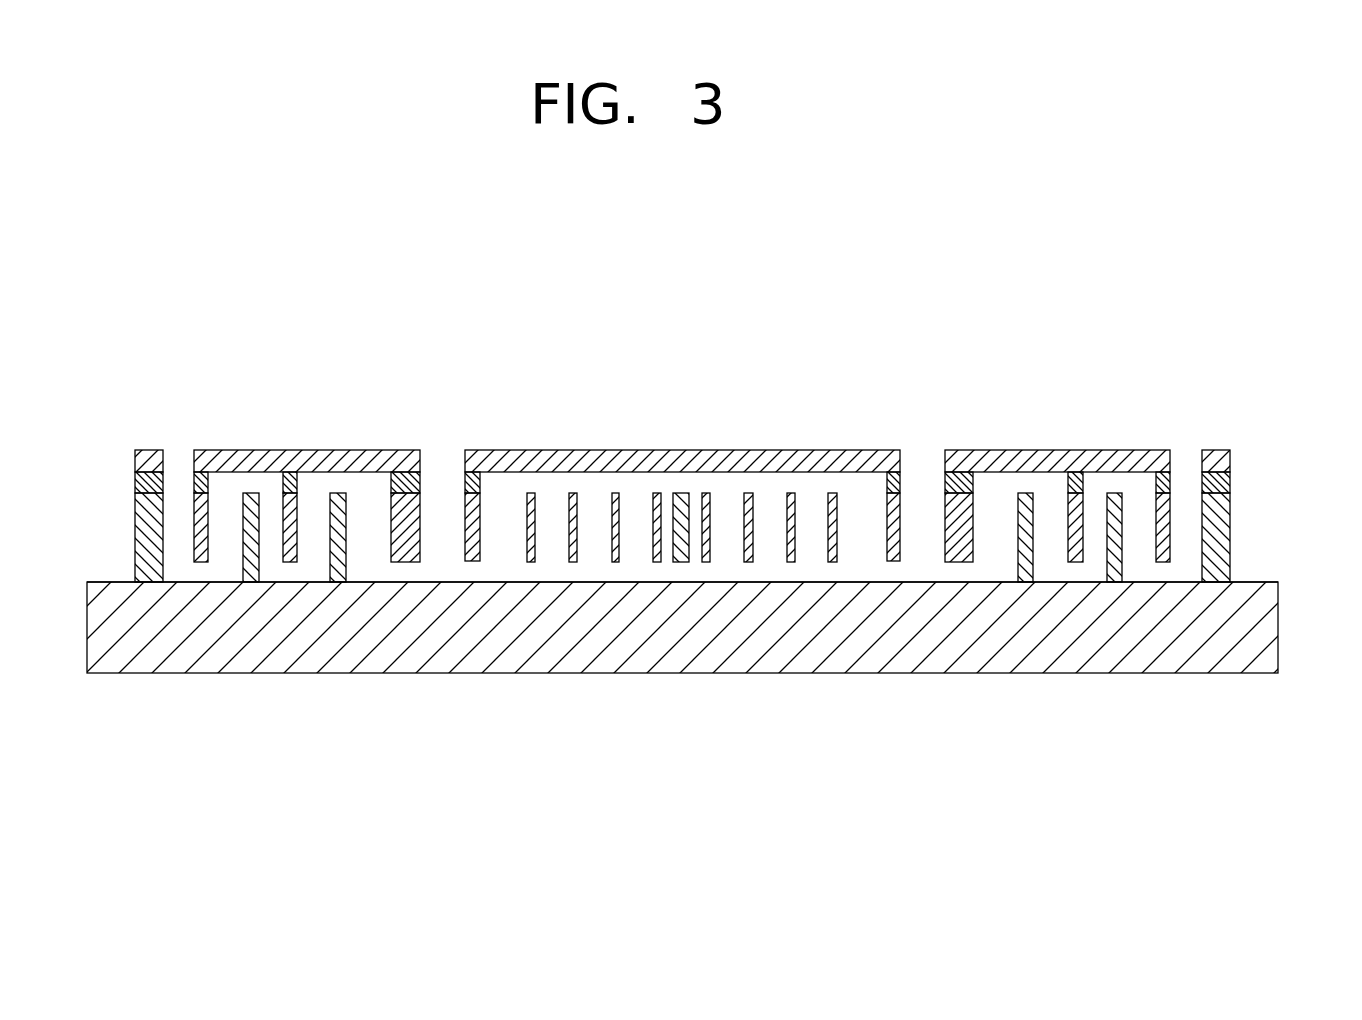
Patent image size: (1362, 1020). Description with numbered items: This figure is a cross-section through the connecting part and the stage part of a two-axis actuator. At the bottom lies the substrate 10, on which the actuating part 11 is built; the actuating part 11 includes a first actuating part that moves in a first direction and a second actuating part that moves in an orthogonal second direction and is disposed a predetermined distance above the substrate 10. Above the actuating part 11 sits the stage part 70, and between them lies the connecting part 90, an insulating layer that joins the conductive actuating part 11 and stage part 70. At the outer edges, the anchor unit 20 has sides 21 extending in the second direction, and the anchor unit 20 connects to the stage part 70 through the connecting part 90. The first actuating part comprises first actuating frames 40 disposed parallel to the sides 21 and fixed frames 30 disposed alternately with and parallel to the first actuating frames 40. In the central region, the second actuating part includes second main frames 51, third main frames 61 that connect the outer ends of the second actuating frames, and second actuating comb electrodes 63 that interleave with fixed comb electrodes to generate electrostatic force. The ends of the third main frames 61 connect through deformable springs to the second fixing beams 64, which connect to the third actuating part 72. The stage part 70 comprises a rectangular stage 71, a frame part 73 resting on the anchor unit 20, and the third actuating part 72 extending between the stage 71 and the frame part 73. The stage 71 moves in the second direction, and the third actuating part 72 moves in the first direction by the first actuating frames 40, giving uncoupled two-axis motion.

The substrate 10 is at (100, 628).
The actuating part 11 is at (133, 556).
The anchor unit 20 is at (687, 537).
The sides extending in the second direction 21 is at (145, 531).
The fixed frames 30 is at (247, 570).
The first actuating frames 40 is at (197, 562).
The second main frames 51 is at (677, 563).
The third main frames 61 is at (472, 562).
The second actuating comb electrodes 63 is at (657, 563).
The second fixing beams 64 is at (397, 562).
The stage part 70 is at (639, 426).
The stage 71 is at (693, 460).
The third actuating part 72 is at (330, 460).
The frame part 73 is at (152, 460).
The connecting part 90 is at (133, 482).